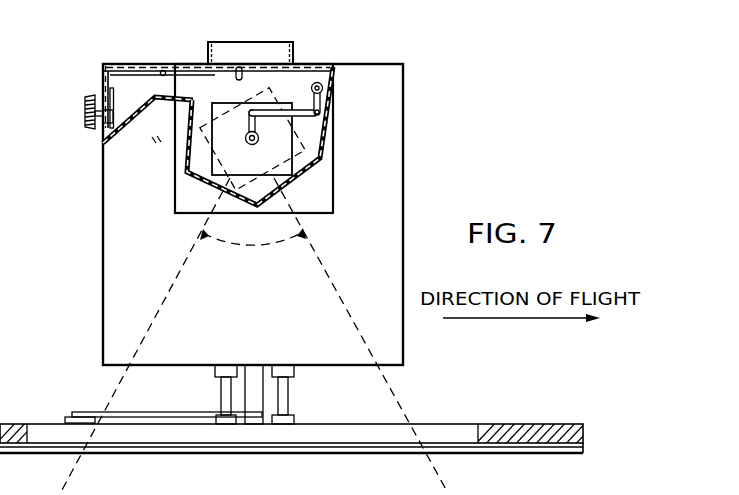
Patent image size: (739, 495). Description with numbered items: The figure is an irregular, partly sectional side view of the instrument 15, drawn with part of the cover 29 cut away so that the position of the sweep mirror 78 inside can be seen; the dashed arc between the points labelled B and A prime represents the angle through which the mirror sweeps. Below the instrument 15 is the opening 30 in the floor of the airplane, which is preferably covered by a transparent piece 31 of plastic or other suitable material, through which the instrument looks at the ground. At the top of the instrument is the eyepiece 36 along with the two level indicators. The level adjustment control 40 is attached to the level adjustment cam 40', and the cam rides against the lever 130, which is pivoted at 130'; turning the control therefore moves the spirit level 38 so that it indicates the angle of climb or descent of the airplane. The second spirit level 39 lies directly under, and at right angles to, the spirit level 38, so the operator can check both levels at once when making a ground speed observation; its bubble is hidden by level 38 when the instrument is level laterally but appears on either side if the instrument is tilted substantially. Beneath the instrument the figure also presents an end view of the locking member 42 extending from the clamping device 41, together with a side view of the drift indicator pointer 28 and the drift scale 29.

The instrument 15 is at (101, 213).
The drift indicator pointer 28 is at (148, 411).
The cover 29 is at (127, 120).
The opening 30 is at (470, 425).
The transparent piece 31 is at (128, 455).
The eyepiece 36 is at (292, 46).
The spirit level 38 is at (246, 63).
The spirit level 39 is at (244, 77).
The level adjustment control 40 is at (83, 130).
The level adjustment cam 40' is at (125, 107).
The clamping device 41 is at (292, 404).
The locking member 42 is at (294, 372).
The sweep mirror 78 is at (214, 102).
The lever 130 is at (218, 44).
The pivot 130' is at (161, 72).